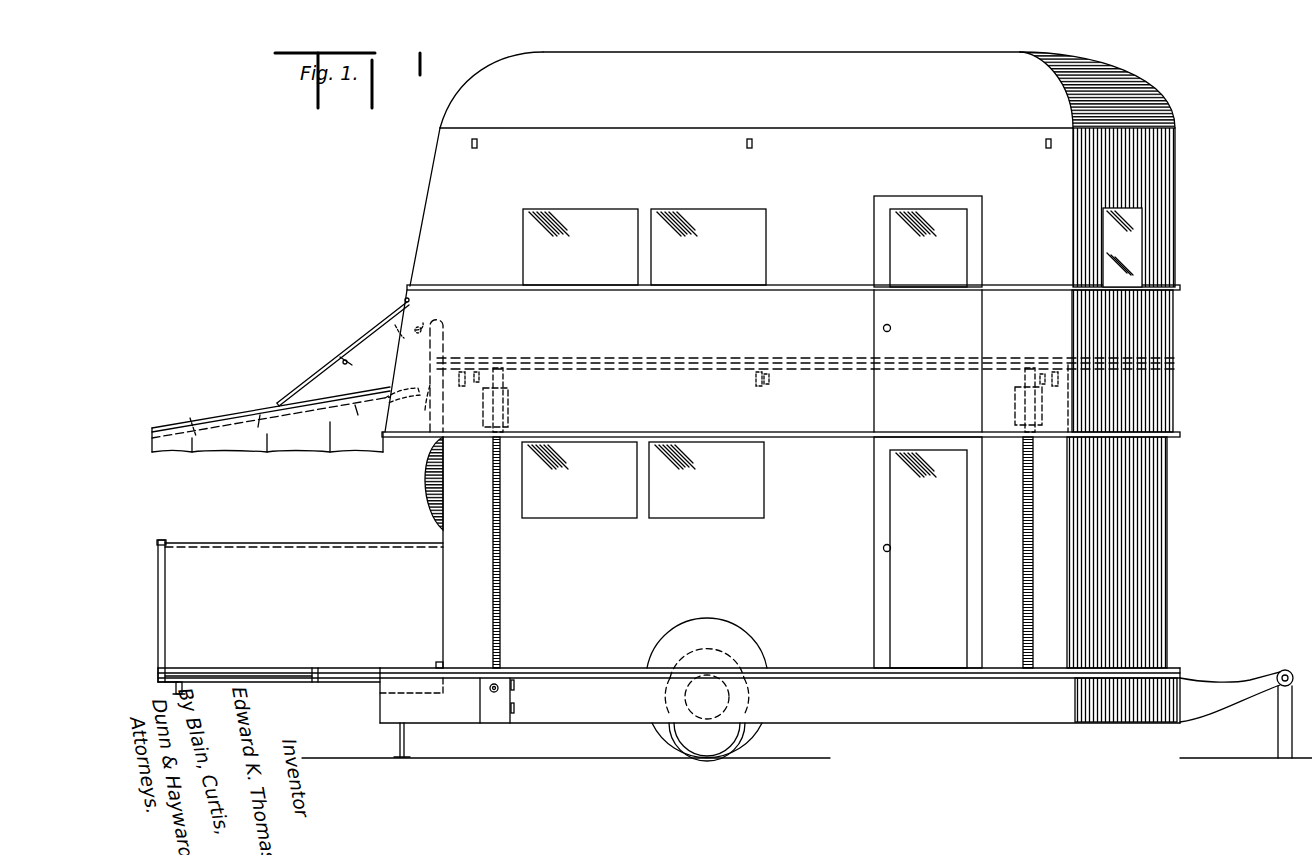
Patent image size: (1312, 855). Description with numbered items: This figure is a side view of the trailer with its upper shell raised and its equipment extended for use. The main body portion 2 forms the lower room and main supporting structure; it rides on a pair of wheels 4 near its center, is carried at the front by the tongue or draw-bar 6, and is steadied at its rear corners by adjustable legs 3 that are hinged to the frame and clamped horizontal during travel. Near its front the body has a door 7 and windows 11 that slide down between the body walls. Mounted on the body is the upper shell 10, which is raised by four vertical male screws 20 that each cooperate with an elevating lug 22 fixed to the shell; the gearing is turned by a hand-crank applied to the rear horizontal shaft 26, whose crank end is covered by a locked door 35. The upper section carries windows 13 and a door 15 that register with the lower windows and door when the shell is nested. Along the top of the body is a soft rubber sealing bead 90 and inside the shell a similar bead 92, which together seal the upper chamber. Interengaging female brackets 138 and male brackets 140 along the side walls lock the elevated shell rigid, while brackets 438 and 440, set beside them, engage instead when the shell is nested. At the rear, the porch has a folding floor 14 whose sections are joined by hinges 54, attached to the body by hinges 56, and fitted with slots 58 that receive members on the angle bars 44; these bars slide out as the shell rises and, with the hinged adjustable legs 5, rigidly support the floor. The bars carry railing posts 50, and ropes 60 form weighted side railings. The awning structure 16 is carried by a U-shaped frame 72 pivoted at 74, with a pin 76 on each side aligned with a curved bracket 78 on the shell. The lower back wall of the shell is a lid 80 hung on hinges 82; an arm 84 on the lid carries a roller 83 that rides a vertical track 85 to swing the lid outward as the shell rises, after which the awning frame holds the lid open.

The main body portion 2 is at (1172, 494).
The adjustable legs 3 is at (398, 740).
The wheels 4 is at (740, 733).
The adjustable legs 5 is at (185, 690).
The tongue or draw-bar 6 is at (1270, 680).
The door 7 is at (884, 568).
The upper shell 10 is at (1182, 157).
The windows 11 is at (668, 500).
The windows 13 is at (590, 217).
The folding floor 14 is at (284, 666).
The door 15 is at (874, 237).
The awning structure 16 is at (236, 412).
The male screws 20 is at (500, 560).
The elevating lug 22 is at (509, 417).
The rear horizontal shaft 26 is at (489, 690).
The locked door 35 is at (493, 710).
The angle bars 44 is at (268, 681).
The posts 50 is at (165, 577).
The hinges 54 is at (315, 683).
The hinges 56 is at (438, 666).
The slots 58 is at (182, 672).
The ropes 60 is at (271, 542).
The U-shaped frame 72 is at (181, 414).
The pivot 74 is at (425, 410).
The pin 76 is at (400, 378).
The curved bracket 78 is at (424, 376).
The lid 80 is at (338, 362).
The hinges 82 is at (406, 304).
The roller 83 is at (422, 328).
The arm 84 is at (388, 340).
The track 85 is at (422, 476).
The sealing bead 90 is at (598, 362).
The bead 92 is at (662, 368).
The female bracket 138 is at (462, 370).
The male bracket 140 is at (468, 386).
The bracket 438 is at (478, 372).
The bracket 440 is at (480, 144).